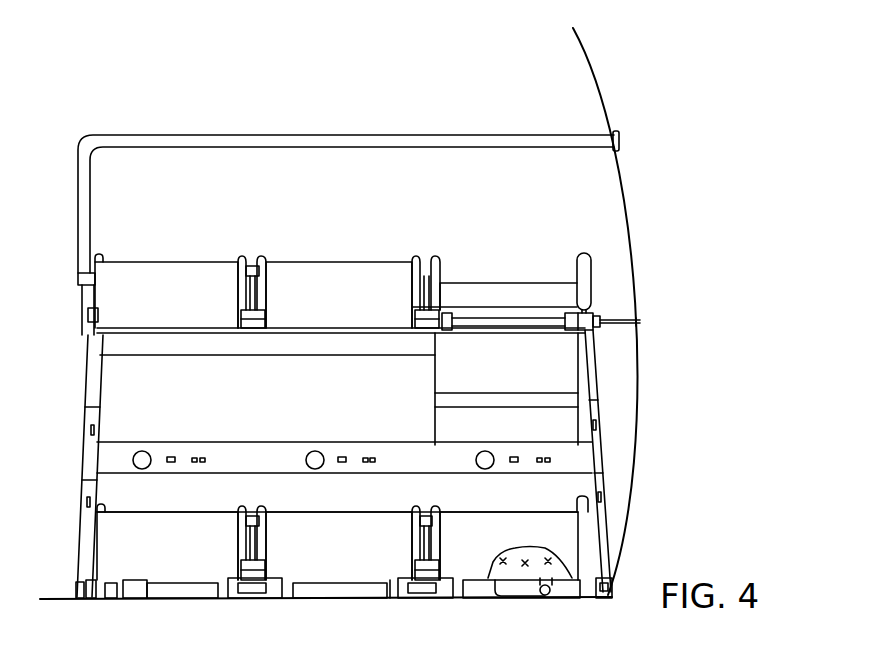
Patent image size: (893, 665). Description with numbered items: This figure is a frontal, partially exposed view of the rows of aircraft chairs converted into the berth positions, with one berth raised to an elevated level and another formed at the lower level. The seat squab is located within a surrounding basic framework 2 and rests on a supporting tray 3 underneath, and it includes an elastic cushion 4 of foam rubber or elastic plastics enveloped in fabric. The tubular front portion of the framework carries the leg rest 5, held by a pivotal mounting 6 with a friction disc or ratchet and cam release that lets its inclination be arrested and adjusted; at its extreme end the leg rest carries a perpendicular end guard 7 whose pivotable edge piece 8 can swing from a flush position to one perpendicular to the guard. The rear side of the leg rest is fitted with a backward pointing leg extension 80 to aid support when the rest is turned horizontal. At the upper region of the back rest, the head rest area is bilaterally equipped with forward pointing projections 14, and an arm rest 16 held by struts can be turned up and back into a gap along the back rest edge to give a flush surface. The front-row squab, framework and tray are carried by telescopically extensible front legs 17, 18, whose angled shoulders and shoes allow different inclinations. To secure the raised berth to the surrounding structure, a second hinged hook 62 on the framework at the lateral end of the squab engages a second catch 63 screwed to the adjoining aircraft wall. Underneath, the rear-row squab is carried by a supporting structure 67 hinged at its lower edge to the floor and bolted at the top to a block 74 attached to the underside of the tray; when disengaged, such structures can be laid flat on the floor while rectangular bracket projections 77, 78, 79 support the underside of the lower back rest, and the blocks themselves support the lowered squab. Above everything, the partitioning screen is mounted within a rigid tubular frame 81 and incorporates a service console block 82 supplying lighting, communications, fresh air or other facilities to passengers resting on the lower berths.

The tubular frame 81 is at (167, 140).
The front leg 17 is at (84, 530).
The front leg 18 is at (603, 482).
The end guard 7 is at (178, 274).
The forward pointing projection 14 is at (580, 258).
The basic framework 2 is at (511, 318).
The pivotal mounting 6 is at (453, 313).
The second hinged hook 62 is at (606, 318).
The second catch 63 is at (640, 330).
The leg rest 5 is at (506, 389).
The edge piece 8 is at (435, 398).
The service console block 82 is at (160, 452).
The arm rest 16 is at (258, 528).
The supporting tray 3 is at (526, 566).
The block 74 is at (147, 588).
The rectangular bracket projection 77 is at (262, 590).
The leg extension 80 is at (393, 590).
The rectangular bracket projection 79 is at (420, 588).
The elastic cushion 4 is at (510, 572).
The supporting structure 67 is at (530, 596).
The rectangular bracket projection 78 is at (550, 588).